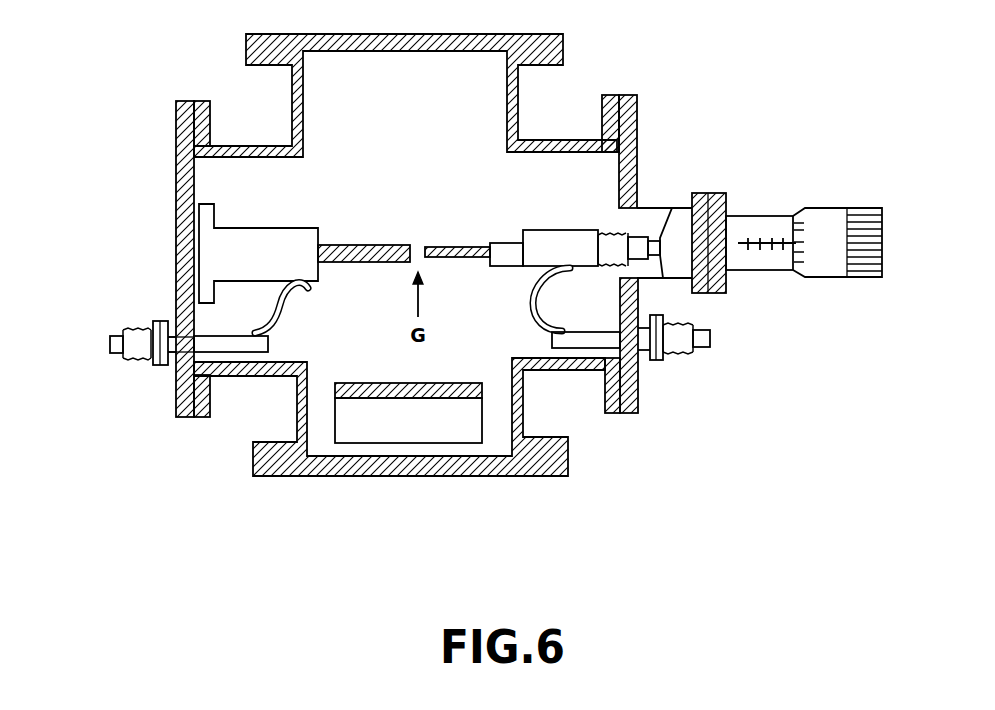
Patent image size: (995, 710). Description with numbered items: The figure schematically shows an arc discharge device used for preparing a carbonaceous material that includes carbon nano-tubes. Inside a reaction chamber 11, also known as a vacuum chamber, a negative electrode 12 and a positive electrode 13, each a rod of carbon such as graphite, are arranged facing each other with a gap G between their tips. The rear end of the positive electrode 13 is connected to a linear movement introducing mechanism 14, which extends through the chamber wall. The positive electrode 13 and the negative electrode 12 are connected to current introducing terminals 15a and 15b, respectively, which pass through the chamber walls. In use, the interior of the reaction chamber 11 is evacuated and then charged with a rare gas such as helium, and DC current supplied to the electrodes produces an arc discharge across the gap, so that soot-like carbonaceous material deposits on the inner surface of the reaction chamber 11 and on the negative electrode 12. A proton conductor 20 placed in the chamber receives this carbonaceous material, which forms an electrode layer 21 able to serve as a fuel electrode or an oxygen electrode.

The reaction chamber 11 is at (208, 180).
The negative electrode 12 is at (338, 243).
The positive electrode 13 is at (445, 247).
The linear movement introducing mechanism 14 is at (858, 277).
The current introducing terminal 15a is at (710, 338).
The current introducing terminal 15b is at (110, 343).
The proton conductor 20 is at (472, 413).
The electrode layer 21 is at (437, 383).